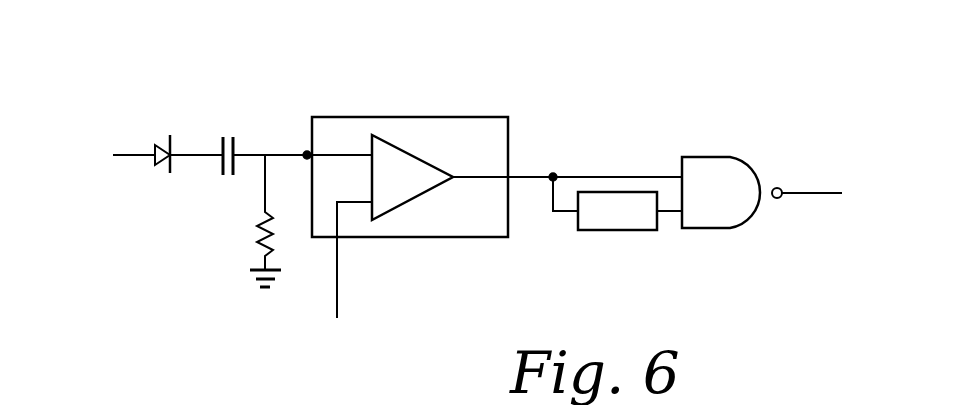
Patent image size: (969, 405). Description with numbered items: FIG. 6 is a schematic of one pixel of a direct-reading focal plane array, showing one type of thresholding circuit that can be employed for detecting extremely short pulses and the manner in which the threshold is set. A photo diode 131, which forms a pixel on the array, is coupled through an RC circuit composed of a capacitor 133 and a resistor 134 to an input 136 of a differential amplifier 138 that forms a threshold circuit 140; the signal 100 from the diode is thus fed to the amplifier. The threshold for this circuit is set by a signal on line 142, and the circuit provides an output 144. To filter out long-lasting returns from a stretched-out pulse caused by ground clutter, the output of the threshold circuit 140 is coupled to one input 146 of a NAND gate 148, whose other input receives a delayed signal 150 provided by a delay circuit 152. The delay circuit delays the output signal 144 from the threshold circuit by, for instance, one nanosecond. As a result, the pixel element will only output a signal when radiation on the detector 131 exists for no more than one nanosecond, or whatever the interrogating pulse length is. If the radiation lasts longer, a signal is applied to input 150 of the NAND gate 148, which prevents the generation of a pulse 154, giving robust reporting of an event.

The input signal 100 is at (368, 153).
The photo diode 131 is at (163, 164).
The capacitor 133 is at (220, 146).
The resistor 134 is at (256, 240).
The input 136 is at (304, 155).
The differential amplifier 138 is at (412, 177).
The threshold circuit 140 is at (393, 116).
The line 142 is at (338, 253).
The output 144 is at (523, 176).
The input 146 is at (680, 176).
The NAND gate 148 is at (723, 157).
The delayed signal 150 is at (667, 212).
The delay circuit 152 is at (616, 232).
The pulse 154 is at (805, 192).